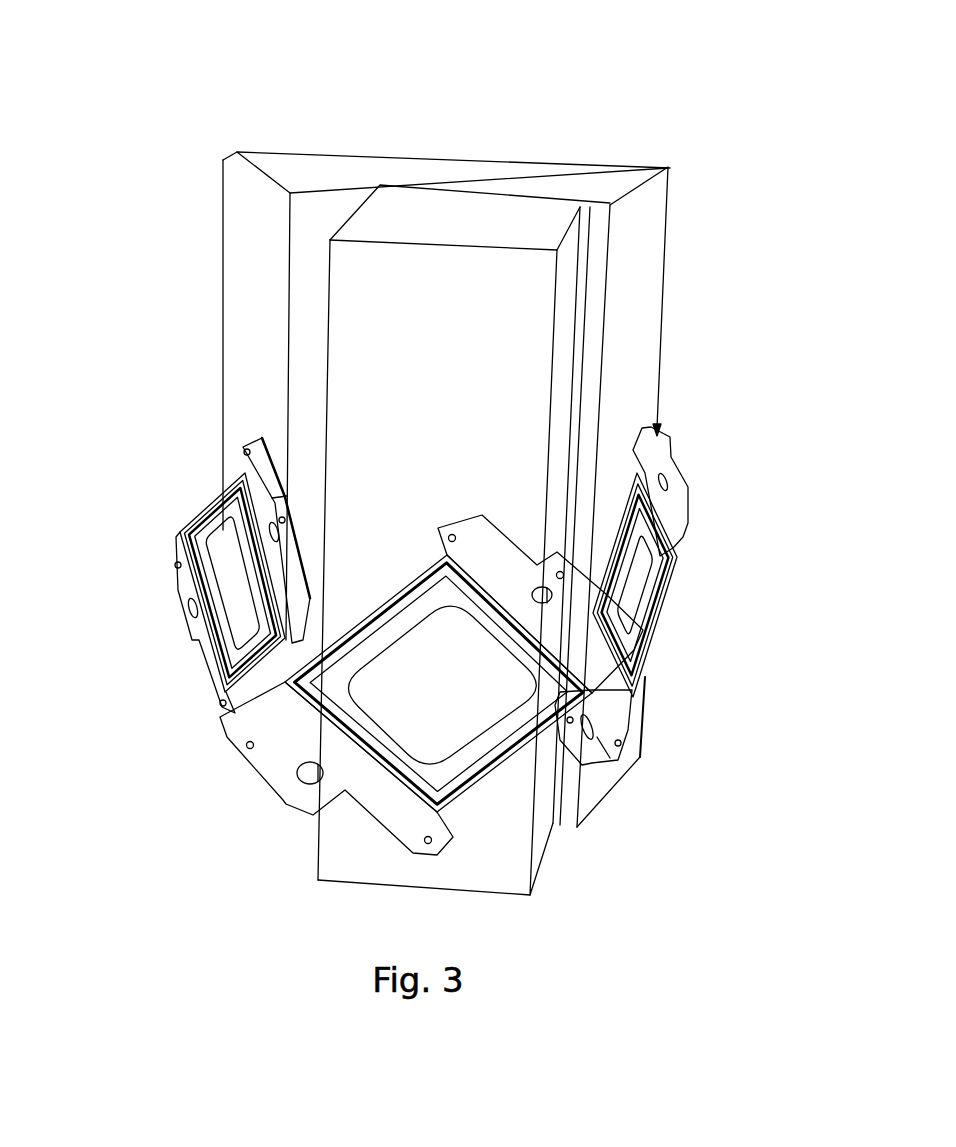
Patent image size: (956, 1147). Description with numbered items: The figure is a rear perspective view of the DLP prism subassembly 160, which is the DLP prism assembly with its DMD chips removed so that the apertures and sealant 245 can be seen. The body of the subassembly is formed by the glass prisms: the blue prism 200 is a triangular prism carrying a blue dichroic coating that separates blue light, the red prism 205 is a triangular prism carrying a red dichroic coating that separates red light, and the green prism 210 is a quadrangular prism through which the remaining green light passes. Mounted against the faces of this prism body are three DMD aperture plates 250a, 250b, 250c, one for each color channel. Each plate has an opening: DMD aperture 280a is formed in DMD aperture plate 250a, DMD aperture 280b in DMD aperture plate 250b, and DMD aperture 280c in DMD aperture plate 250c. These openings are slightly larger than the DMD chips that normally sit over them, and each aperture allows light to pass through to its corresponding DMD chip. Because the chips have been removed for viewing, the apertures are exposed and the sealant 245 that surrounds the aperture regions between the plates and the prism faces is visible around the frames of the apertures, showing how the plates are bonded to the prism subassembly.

The DLP prism subassembly 160 is at (160, 81).
The blue prism 200 is at (287, 163).
The green prism 210 is at (465, 212).
The red prism 205 is at (667, 165).
The DMD aperture plate 250a is at (245, 447).
The DMD aperture plate 250b is at (680, 460).
The DMD aperture plate 250c is at (300, 808).
The DMD aperture 280a is at (250, 602).
The DMD aperture 280b is at (633, 560).
The DMD aperture 280c is at (500, 717).
The sealant 245 is at (305, 608).